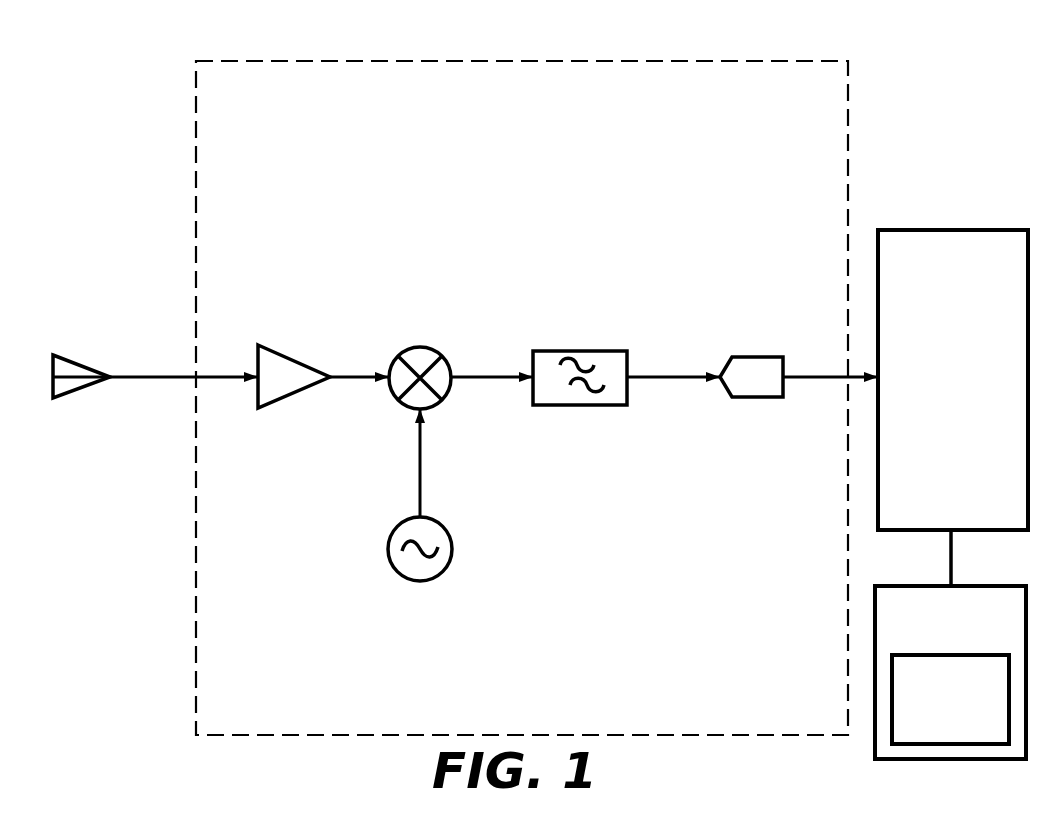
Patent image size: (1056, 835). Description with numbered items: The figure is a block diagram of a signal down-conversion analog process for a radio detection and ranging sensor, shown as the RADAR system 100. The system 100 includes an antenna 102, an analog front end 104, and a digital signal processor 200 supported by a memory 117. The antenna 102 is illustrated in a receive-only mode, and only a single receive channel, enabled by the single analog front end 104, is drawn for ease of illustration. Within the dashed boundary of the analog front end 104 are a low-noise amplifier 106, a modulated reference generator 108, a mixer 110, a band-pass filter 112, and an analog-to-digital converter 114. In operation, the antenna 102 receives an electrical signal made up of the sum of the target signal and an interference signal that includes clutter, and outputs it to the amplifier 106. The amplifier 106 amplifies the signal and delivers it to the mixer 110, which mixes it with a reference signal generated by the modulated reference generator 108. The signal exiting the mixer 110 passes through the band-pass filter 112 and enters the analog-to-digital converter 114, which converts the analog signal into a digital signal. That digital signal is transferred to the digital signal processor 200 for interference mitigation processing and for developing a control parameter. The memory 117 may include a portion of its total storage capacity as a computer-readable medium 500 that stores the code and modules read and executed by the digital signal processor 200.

The radio detection and ranging (RADAR) system 100 is at (832, 48).
The antenna 102 is at (72, 357).
The analog front end 104 is at (480, 60).
The low-noise amplifier 106 is at (270, 346).
The modulated reference generator 108 is at (440, 520).
The mixer 110 is at (422, 347).
The band-pass filter 112 is at (548, 349).
The analog-to-digital converter (ADC) 114 is at (748, 360).
The digital signal processor 200 is at (953, 408).
The memory 117 is at (950, 672).
The computer-readable medium (CRM) 500 is at (950, 699).